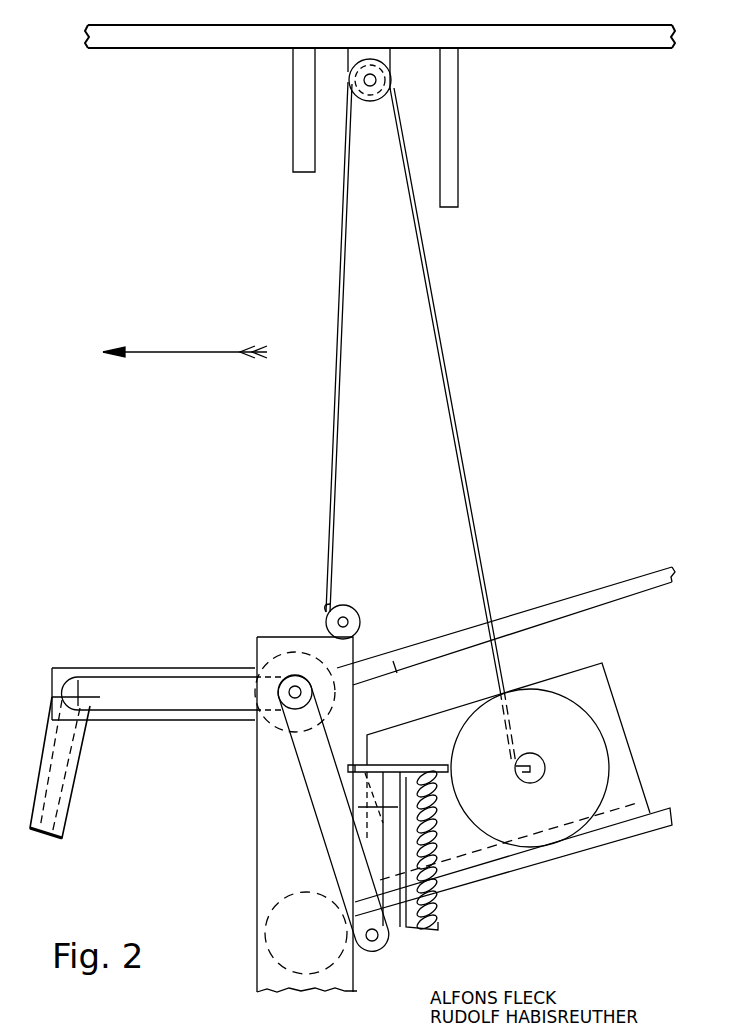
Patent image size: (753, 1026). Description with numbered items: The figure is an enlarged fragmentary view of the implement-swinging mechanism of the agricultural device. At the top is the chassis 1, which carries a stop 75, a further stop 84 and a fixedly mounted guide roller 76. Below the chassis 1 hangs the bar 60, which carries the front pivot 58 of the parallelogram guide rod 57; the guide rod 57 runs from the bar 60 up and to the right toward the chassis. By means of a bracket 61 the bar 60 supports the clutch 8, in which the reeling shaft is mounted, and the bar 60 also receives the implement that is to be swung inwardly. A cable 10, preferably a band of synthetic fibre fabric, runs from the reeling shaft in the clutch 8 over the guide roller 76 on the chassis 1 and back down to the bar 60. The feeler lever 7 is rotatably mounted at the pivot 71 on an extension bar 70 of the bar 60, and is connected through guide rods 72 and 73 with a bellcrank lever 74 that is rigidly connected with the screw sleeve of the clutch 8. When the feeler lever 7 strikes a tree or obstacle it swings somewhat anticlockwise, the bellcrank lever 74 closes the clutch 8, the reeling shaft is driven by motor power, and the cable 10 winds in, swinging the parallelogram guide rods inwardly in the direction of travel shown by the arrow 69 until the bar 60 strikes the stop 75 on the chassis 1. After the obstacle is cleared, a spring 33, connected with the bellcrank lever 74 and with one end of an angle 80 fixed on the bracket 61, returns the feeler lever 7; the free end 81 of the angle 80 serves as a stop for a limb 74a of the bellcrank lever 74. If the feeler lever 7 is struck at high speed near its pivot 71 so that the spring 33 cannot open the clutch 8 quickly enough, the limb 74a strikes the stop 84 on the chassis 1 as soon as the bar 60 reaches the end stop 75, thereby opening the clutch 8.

The chassis 1 is at (195, 42).
The feeler lever 7 is at (62, 786).
The clutch 8 is at (600, 757).
The cable 10 is at (350, 262).
The spring 33 is at (437, 830).
The parallelogram guide rod 57 is at (568, 608).
The front pivot 58 is at (264, 944).
The bar 60 is at (263, 771).
The bracket 61 is at (605, 694).
The arrow 69 is at (178, 339).
The extension bar 70 is at (139, 668).
The pivot 71 is at (84, 698).
The guide rod 72 is at (186, 700).
The guide rod 73 is at (322, 801).
The bellcrank lever 74 is at (373, 843).
The limb 74a is at (417, 768).
The stop 75 is at (302, 118).
The guide roller 76 is at (376, 80).
The angle 80 is at (412, 935).
The free end 81 is at (388, 787).
The stop 84 is at (452, 120).